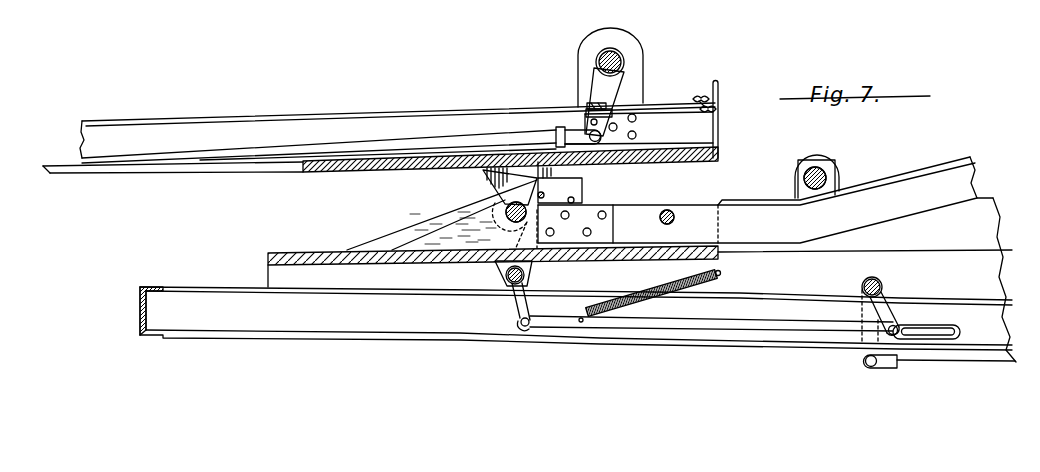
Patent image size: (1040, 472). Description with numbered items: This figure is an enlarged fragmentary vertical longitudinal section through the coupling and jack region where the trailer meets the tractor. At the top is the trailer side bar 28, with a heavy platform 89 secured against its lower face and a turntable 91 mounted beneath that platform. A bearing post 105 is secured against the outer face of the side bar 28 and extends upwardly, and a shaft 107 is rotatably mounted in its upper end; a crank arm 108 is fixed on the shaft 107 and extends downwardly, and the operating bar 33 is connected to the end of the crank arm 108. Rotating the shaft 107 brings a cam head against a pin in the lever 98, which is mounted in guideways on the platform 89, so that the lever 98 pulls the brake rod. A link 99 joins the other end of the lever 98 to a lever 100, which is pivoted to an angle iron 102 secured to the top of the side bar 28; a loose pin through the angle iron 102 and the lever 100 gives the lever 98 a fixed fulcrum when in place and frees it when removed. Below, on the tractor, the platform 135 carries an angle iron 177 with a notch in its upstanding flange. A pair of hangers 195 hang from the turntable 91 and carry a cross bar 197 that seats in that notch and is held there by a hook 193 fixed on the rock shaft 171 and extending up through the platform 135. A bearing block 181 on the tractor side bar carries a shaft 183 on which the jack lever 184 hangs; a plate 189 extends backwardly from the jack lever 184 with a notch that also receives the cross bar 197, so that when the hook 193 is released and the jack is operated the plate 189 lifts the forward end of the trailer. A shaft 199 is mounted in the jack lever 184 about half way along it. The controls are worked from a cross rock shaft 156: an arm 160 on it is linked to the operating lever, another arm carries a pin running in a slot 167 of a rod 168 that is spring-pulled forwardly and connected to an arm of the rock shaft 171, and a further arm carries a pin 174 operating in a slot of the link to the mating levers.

The side bar 28 is at (315, 120).
The operating bar 33 is at (477, 135).
The turntable 91 is at (417, 153).
The platform 89 is at (722, 153).
The lever 98 is at (590, 104).
The bearing post 105 is at (628, 38).
The shaft 107 is at (625, 63).
The crank arm 108 is at (614, 88).
The angle iron 102 is at (720, 90).
The lever 100 is at (714, 105).
The link 99 is at (648, 115).
The bearing block 181 is at (825, 150).
The shaft 183 is at (828, 175).
The jack lever 184 is at (757, 217).
The shaft 199 is at (667, 210).
The hook 193 is at (583, 186).
The pair of hangers 195 is at (417, 175).
The plate 189 is at (477, 222).
The cross bar 197 is at (503, 205).
The angle iron 177 is at (400, 236).
The platform 135 is at (290, 255).
The rock shaft 171 is at (523, 278).
The pin 174 is at (520, 321).
The rod 168 is at (630, 324).
The rock shaft 156 is at (882, 284).
The arm 160 is at (898, 326).
The slot 167 is at (953, 328).